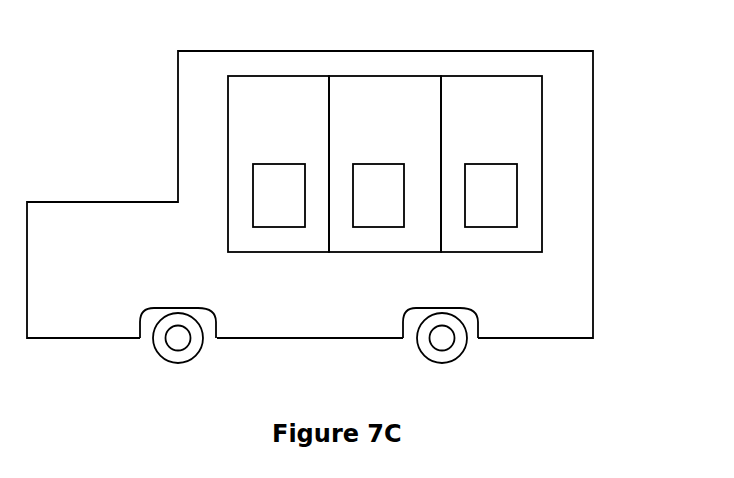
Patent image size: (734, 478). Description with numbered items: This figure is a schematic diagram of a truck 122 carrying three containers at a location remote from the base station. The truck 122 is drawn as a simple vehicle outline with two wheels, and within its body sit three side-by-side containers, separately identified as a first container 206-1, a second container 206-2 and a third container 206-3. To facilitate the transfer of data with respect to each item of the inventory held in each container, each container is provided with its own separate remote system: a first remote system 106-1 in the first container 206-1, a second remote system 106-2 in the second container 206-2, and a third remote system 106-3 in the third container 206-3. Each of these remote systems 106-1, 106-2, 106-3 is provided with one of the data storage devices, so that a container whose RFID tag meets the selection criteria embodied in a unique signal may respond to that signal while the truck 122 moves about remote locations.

The truck 122 is at (593, 275).
The container 206-1 is at (278, 88).
The container 206-2 is at (391, 88).
The container 206-3 is at (490, 88).
The remote system 106-1 is at (291, 164).
The remote system 106-2 is at (392, 164).
The remote system 106-3 is at (504, 201).